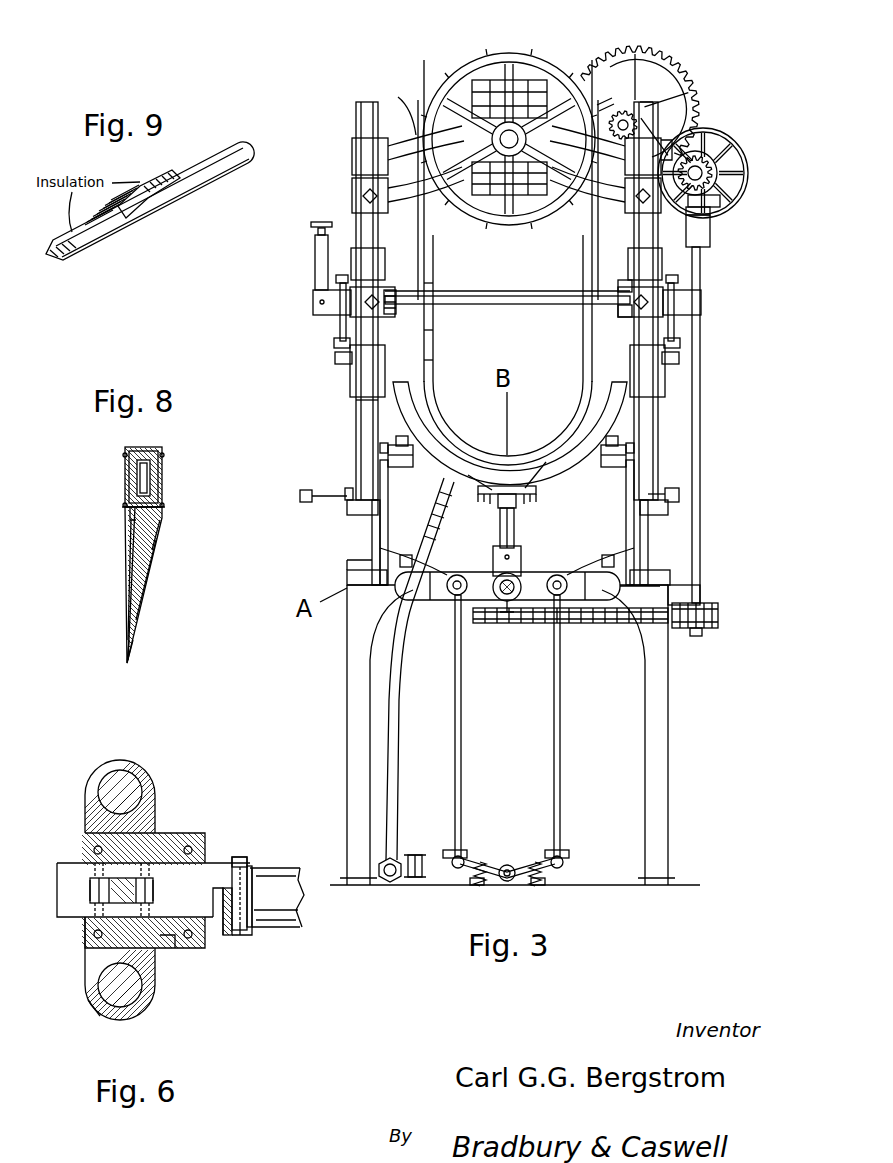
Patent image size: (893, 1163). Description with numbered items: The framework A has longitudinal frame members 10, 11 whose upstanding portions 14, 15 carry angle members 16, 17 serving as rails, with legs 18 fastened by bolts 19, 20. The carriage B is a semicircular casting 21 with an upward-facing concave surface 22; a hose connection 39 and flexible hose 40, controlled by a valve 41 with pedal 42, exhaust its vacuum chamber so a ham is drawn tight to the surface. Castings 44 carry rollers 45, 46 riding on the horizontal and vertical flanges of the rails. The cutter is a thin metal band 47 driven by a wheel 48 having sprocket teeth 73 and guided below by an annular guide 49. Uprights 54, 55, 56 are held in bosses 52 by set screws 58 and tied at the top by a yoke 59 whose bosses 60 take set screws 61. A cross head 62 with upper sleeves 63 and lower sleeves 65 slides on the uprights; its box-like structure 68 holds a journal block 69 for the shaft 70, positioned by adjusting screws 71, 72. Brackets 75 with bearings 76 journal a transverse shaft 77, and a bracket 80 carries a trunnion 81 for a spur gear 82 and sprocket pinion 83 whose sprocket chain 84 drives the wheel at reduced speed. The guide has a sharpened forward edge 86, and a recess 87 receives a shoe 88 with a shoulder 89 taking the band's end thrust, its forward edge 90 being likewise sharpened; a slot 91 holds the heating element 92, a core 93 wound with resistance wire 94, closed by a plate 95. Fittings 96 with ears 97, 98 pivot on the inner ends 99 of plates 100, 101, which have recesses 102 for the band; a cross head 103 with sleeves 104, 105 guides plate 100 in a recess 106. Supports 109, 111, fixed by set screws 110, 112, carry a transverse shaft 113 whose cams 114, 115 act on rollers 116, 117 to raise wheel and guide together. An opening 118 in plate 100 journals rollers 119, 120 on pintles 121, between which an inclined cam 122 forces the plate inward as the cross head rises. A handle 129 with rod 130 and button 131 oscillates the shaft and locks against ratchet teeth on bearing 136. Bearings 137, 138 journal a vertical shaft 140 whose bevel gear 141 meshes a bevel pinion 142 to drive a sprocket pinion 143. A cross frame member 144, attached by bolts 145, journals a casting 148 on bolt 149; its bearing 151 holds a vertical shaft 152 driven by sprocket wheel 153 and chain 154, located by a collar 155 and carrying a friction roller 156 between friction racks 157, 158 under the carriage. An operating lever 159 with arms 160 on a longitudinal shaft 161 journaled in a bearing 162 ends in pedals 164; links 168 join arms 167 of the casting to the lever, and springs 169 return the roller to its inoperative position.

In FIG. 3, the longitudinal frame member 10 is at (372, 545).
In FIG. 3, the longitudinal frame member 11 is at (650, 540).
In FIG. 3, the upstanding portion 14 is at (386, 474).
In FIG. 3, the upstanding portion 15 is at (636, 473).
In FIG. 3, the longitudinal angle member 16 is at (388, 450).
In FIG. 3, the longitudinal angle member 17 is at (660, 458).
In FIG. 3, the leg 18 is at (347, 698).
In FIG. 3, the bolt 19 is at (404, 555).
In FIG. 3, the bolt 20 is at (372, 578).
In FIG. 3, the casting 21 is at (468, 473).
In FIG. 3, the concave surface 22 is at (547, 460).
In FIG. 3, the hose connection 39 is at (447, 470).
In FIG. 3, the flexible hose 40 is at (388, 740).
In FIG. 3, the valve 41 is at (391, 882).
In FIG. 3, the pedal 42 is at (422, 870).
In FIG. 3, the casting 44 is at (356, 430).
In FIG. 3, the roller 45 is at (400, 433).
In FIG. 3, the roller 46 is at (402, 468).
In FIG. 8, the cutting band 47 is at (129, 569).
In FIG. 6, the cutting band 47 is at (236, 934).
In FIG. 3, the cutting band 47 is at (425, 283).
In FIG. 3, the driving wheel 48 is at (432, 92).
In FIG. 8, the guide 49 is at (160, 530).
In FIG. 6, the guide 49 is at (290, 930).
In FIG. 3, the guide 49 is at (562, 432).
In FIG. 3, the boss 52 is at (348, 494).
In FIG. 6, the upright 54 is at (118, 778).
In FIG. 3, the upright 54 is at (660, 410).
In FIG. 6, the upright 55 is at (96, 1010).
In FIG. 3, the upright 56 is at (362, 412).
In FIG. 3, the set screw 58 is at (300, 496).
In FIG. 3, the yoke 59 is at (580, 300).
In FIG. 3, the boss 60 is at (352, 190).
In FIG. 3, the set screw 61 is at (370, 195).
In FIG. 3, the cross head 62 is at (395, 148).
In FIG. 3, the upper sleeve 63 is at (352, 150).
In FIG. 3, the lower sleeve 65 is at (351, 262).
In FIG. 3, the box-like structure 68 is at (480, 97).
In FIG. 3, the journal block 69 is at (567, 88).
In FIG. 3, the shaft 70 is at (509, 148).
In FIG. 3, the adjusting screw 71 is at (517, 95).
In FIG. 3, the adjusting screw 72 is at (490, 197).
In FIG. 3, the sprocket tooth 73 is at (398, 97).
In FIG. 3, the bracket 75 is at (708, 207).
In FIG. 3, the bearing 76 is at (703, 173).
In FIG. 3, the transverse shaft 77 is at (735, 152).
In FIG. 3, the bracket 80 is at (628, 120).
In FIG. 3, the trunnion 81 is at (637, 123).
In FIG. 3, the spur gear 82 is at (670, 146).
In FIG. 3, the sprocket pinion 83 is at (612, 104).
In FIG. 3, the sprocket chain 84 is at (538, 80).
In FIG. 8, the sharpened edge 86 is at (150, 585).
In FIG. 8, the recess 87 is at (138, 535).
In FIG. 8, the shoe 88 is at (131, 601).
In FIG. 8, the shoulder 89 is at (128, 521).
In FIG. 8, the forward edge 90 is at (131, 645).
In FIG. 8, the slot 91 is at (150, 477).
In FIG. 9, the heating element 92 is at (164, 205).
In FIG. 8, the heating element 92 is at (164, 456).
In FIG. 9, the core 93 is at (90, 250).
In FIG. 9, the resistance wire 94 is at (112, 228).
In FIG. 8, the plate 95 is at (128, 465).
In FIG. 6, the fitting 96 is at (288, 928).
In FIG. 3, the fitting 96 is at (434, 368).
In FIG. 6, the ear 97 is at (242, 932).
In FIG. 6, the ear 98 is at (242, 857).
In FIG. 6, the inner end 99 is at (254, 880).
In FIG. 6, the plate 100 is at (178, 870).
In FIG. 3, the plate 100 is at (335, 358).
In FIG. 3, the plate 101 is at (680, 360).
In FIG. 6, the recess 102 is at (218, 905).
In FIG. 3, the recess 102 is at (426, 343).
In FIG. 6, the cross head 103 is at (162, 994).
In FIG. 6, the sleeve 104 is at (150, 776).
In FIG. 6, the sleeve 105 is at (102, 1022).
In FIG. 3, the sleeve 105 is at (350, 385).
In FIG. 6, the recess 106 is at (172, 940).
In FIG. 3, the support 109 is at (382, 292).
In FIG. 3, the set screw 110 is at (396, 298).
In FIG. 3, the support 111 is at (627, 320).
In FIG. 3, the set screw 112 is at (627, 313).
In FIG. 3, the transverse shaft 113 is at (507, 296).
In FIG. 3, the cam 114 is at (340, 336).
In FIG. 3, the cam 115 is at (674, 320).
In FIG. 3, the roller 116 is at (338, 278).
In FIG. 3, the roller 117 is at (336, 346).
In FIG. 6, the opening 118 is at (96, 887).
In FIG. 6, the roller 119 is at (98, 905).
In FIG. 6, the roller 120 is at (150, 892).
In FIG. 6, the pintle 121 is at (80, 956).
In FIG. 6, the inclined cam 122 is at (118, 877).
In FIG. 3, the handle 129 is at (315, 246).
In FIG. 3, the rod 130 is at (316, 231).
In FIG. 3, the button 131 is at (320, 223).
In FIG. 3, the bearing 136 is at (424, 290).
In FIG. 3, the bearing 137 is at (712, 245).
In FIG. 3, the bearing 138 is at (700, 598).
In FIG. 3, the vertical shaft 140 is at (700, 452).
In FIG. 3, the bevel gear 141 is at (720, 200).
In FIG. 3, the bevel pinion 142 is at (702, 158).
In FIG. 3, the sprocket pinion 143 is at (712, 630).
In FIG. 3, the cross frame member 144 is at (445, 596).
In FIG. 3, the bolt 145 is at (362, 561).
In FIG. 3, the casting 148 is at (530, 596).
In FIG. 3, the bolt 149 is at (503, 600).
In FIG. 3, the vertical bearing 151 is at (522, 572).
In FIG. 3, the vertical shaft 152 is at (514, 532).
In FIG. 3, the sprocket wheel 153 is at (514, 620).
In FIG. 3, the sprocket chain 154 is at (630, 625).
In FIG. 3, the collar 155 is at (493, 558).
In FIG. 3, the friction roller 156 is at (498, 506).
In FIG. 3, the friction rack 157 is at (490, 493).
In FIG. 3, the friction rack 158 is at (530, 493).
In FIG. 3, the operating lever 159 is at (492, 862).
In FIG. 3, the arm 160 is at (478, 856).
In FIG. 3, the longitudinal shaft 161 is at (514, 868).
In FIG. 3, the bearing 162 is at (502, 880).
In FIG. 3, the pedal 164 is at (455, 850).
In FIG. 3, the arm 167 is at (590, 624).
In FIG. 3, the link 168 is at (555, 754).
In FIG. 3, the spring 169 is at (470, 882).